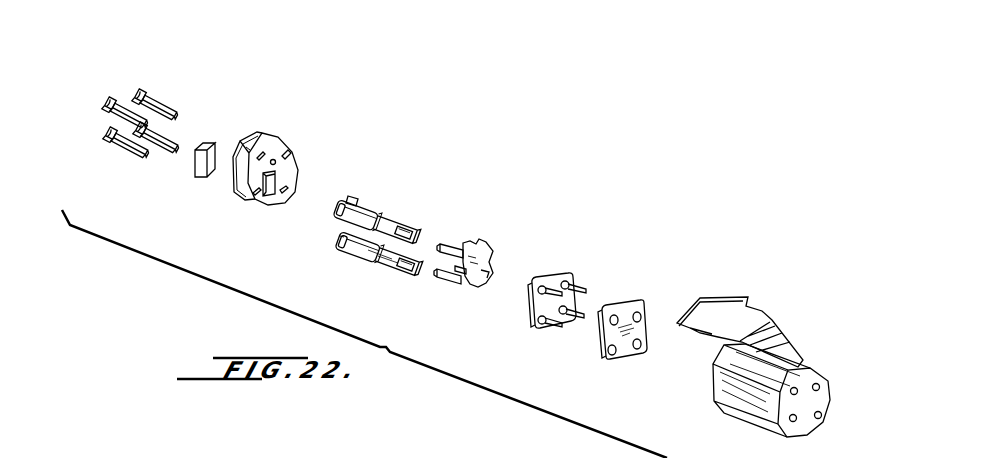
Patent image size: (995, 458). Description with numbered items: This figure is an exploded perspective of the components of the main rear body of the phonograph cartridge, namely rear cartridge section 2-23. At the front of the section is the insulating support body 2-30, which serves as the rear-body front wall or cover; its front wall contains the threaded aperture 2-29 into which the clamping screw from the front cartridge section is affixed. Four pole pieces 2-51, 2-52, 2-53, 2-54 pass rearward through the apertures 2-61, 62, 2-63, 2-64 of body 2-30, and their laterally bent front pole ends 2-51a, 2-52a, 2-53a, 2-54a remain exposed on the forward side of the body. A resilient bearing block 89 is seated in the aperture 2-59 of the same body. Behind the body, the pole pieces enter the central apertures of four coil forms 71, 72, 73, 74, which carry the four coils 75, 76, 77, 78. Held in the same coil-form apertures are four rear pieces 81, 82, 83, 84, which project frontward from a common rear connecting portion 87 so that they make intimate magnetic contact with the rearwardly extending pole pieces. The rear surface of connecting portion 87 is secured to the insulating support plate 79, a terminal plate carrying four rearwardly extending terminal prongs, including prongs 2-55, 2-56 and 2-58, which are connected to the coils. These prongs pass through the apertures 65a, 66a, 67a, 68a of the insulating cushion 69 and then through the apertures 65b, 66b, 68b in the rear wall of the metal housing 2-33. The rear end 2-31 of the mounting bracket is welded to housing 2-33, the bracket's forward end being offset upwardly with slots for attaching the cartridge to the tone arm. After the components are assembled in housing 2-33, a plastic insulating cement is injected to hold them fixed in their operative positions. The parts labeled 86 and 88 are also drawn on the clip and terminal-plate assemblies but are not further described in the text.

The rear cartridge section 2-23 is at (466, 179).
The threaded aperture 2-29 is at (276, 159).
The insulating support body 2-30 is at (295, 162).
The rear end of mounting bracket 2-31 is at (773, 331).
The metal housing 2-33 is at (778, 377).
The pole piece 2-51 is at (133, 148).
The front pole end 2-51a is at (107, 145).
The pole piece 2-52 is at (153, 104).
The front pole end 2-52a is at (140, 92).
The pole piece 2-53 is at (168, 148).
The front pole end 2-53a is at (135, 125).
The pole piece 2-54 is at (125, 99).
The front pole end 2-54a is at (105, 98).
The terminal prong 2-55 is at (550, 328).
The terminal prong 2-56 is at (581, 290).
The terminal prong 2-58 is at (556, 278).
The aperture 2-59 is at (271, 192).
The aperture 2-61 is at (250, 203).
The aperture 2-63 is at (286, 191).
The aperture 2-64 is at (246, 148).
The aperture 62 is at (288, 154).
The aperture of insulating cushion 65a is at (611, 355).
The aperture of housing rear wall 65b is at (792, 426).
The aperture of insulating cushion 66a is at (639, 313).
The aperture of housing rear wall 66b is at (821, 386).
The aperture of insulating cushion 67a is at (628, 362).
The aperture of insulating cushion 68a is at (616, 316).
The aperture of housing rear wall 68b is at (799, 387).
The insulating cushion 69 is at (640, 328).
The coil form 71 is at (378, 256).
The coil form 72 is at (407, 210).
The coil form 73 is at (398, 258).
The coil form 74 is at (353, 180).
The coil 75 is at (364, 271).
The coil 76 is at (388, 209).
The coil 77 is at (393, 256).
The coil 78 is at (338, 234).
The insulating support plate 79 is at (568, 302).
The rear piece 81 is at (452, 279).
The rear piece 82 is at (484, 273).
The rear piece 83 is at (463, 286).
The rear piece 84 is at (443, 244).
The clip 86 is at (495, 252).
The common rear connecting portion 87 is at (484, 281).
The terminal pin 88 is at (574, 324).
The resilient bearing block 89 is at (200, 173).